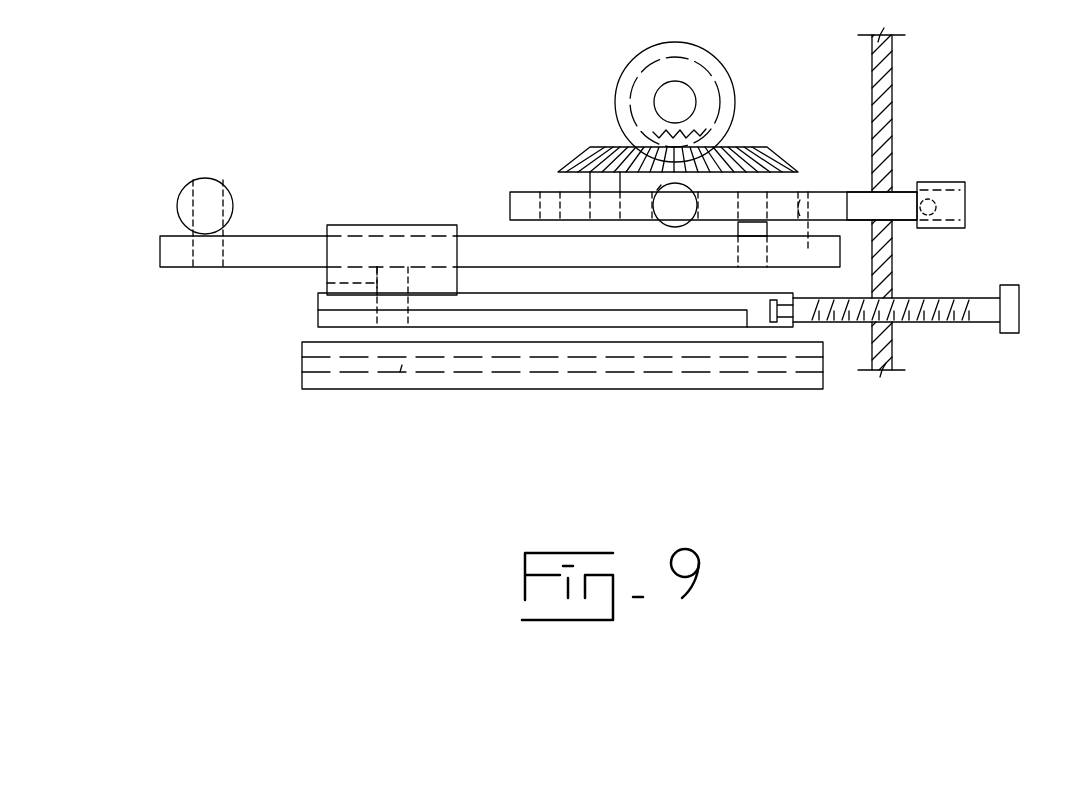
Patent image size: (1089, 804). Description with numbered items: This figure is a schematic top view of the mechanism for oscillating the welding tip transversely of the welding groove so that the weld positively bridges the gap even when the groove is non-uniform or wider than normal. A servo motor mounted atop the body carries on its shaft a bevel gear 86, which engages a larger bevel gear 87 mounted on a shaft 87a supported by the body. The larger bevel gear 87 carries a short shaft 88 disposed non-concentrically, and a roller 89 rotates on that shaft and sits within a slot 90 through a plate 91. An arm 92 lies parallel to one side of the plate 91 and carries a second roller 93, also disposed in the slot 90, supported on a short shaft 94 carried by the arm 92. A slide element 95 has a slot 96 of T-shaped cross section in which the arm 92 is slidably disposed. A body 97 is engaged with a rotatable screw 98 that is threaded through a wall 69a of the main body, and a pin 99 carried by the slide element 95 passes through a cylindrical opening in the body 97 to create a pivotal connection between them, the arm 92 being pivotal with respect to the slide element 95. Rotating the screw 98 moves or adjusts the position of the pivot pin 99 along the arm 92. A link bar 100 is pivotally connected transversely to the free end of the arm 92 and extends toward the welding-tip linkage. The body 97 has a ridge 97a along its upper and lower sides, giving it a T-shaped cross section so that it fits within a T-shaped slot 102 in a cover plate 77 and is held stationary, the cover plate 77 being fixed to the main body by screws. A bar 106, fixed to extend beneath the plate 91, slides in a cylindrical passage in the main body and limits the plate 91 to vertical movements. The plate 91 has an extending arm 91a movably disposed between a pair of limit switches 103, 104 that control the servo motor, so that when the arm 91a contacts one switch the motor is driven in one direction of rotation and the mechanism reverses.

The wall of body 69a is at (893, 260).
The cover plate 77 is at (485, 390).
The bevel gear 86 is at (723, 70).
The larger bevel gear 87 is at (787, 163).
The shaft 87a is at (728, 126).
The short shaft 88 is at (587, 182).
The roller 89 is at (556, 222).
The slot 90 is at (808, 195).
The plate 91 is at (510, 205).
The extending arm 91a is at (903, 188).
The arm 92 is at (294, 236).
The second roller 93 is at (807, 233).
The short shaft 94 is at (738, 227).
The slide element 95 is at (372, 225).
The slot 96 is at (407, 253).
The body 97 is at (318, 303).
The ridge 97a is at (318, 320).
The rotatable screw 98 is at (973, 295).
The pin 99 is at (332, 283).
The link bar 100 is at (233, 205).
The T-shaped slot 102 is at (408, 365).
The limit switch 103 is at (967, 203).
The limit switch 104 is at (967, 220).
The bar 106 is at (660, 186).